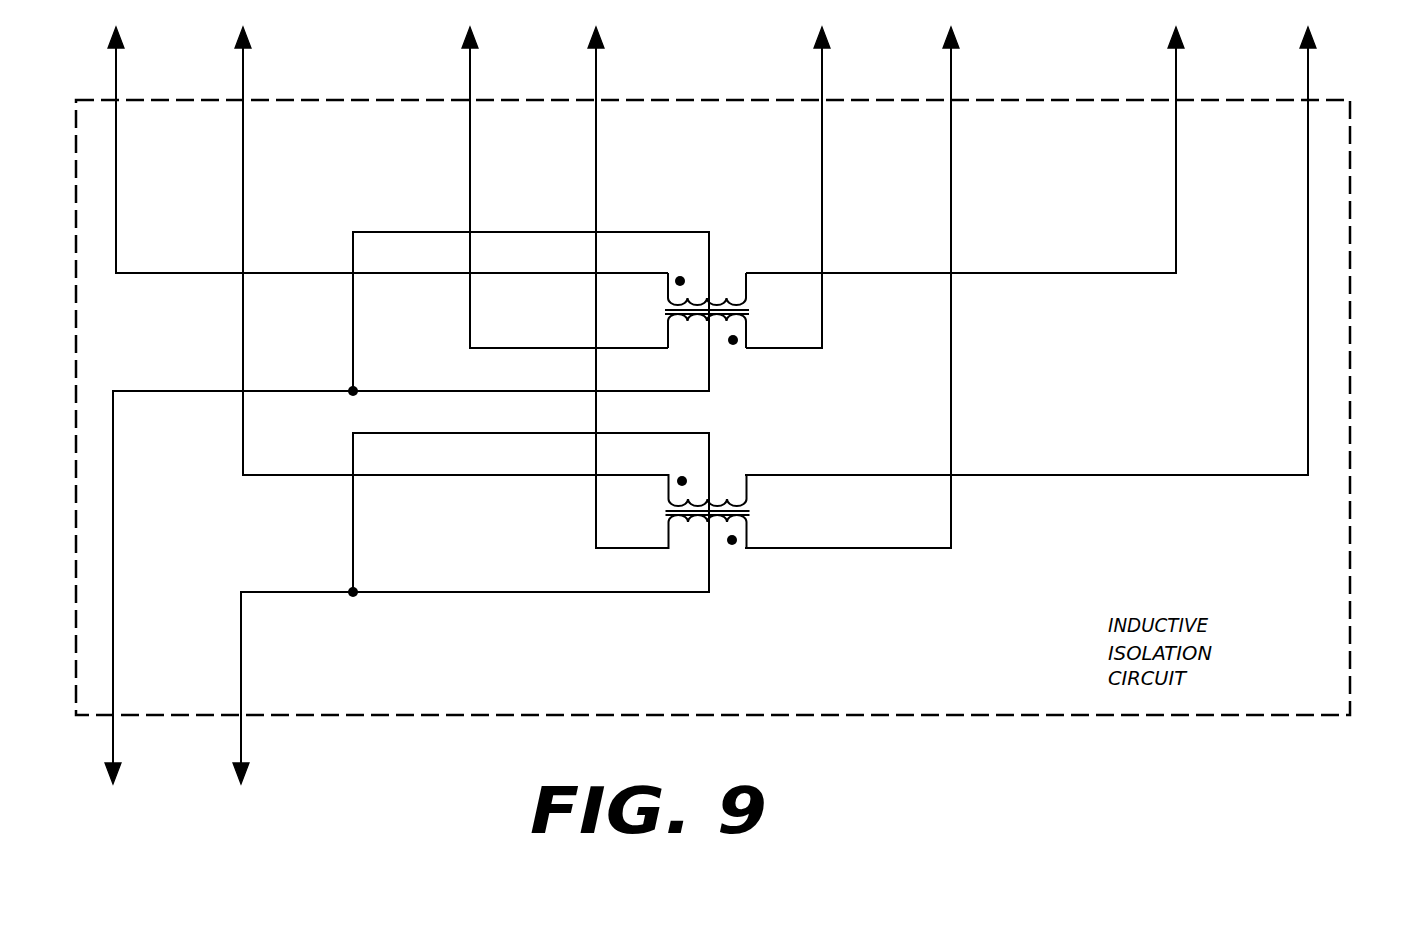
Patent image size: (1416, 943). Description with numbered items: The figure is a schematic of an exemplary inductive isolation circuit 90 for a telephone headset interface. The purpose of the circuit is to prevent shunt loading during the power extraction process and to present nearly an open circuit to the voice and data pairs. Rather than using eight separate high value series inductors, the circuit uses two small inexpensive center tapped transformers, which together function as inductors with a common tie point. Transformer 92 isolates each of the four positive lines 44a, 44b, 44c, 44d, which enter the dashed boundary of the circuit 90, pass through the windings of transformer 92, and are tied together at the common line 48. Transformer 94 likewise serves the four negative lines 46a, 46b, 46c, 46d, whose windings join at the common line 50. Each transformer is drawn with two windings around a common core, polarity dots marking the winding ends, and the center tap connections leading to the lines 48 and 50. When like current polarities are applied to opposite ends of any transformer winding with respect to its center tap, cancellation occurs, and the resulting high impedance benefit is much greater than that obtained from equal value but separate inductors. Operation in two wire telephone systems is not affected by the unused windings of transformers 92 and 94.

The positive line 44a is at (116, 79).
The negative line 46a is at (243, 79).
The positive line 44b is at (470, 79).
The negative line 46b is at (596, 79).
The positive line 44c is at (822, 79).
The negative line 46c is at (951, 79).
The positive line 44d is at (1176, 79).
The negative line 46d is at (1308, 79).
The common tie line 48 is at (113, 750).
The common tie line 50 is at (241, 750).
The inductive isolation circuit 90 is at (1350, 177).
The transformer 92 is at (749, 385).
The transformer 94 is at (747, 461).